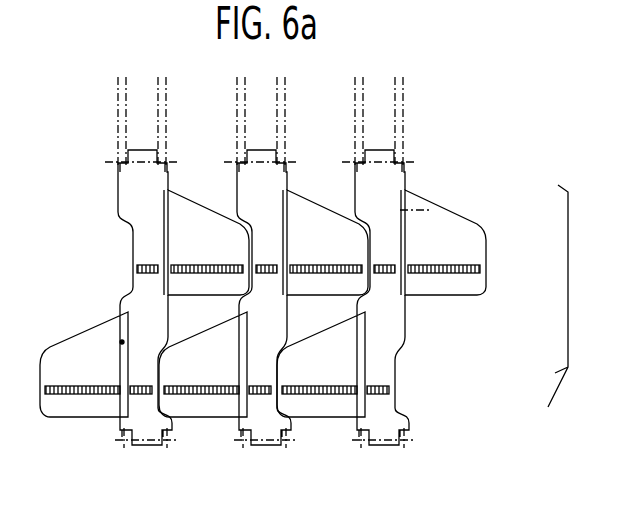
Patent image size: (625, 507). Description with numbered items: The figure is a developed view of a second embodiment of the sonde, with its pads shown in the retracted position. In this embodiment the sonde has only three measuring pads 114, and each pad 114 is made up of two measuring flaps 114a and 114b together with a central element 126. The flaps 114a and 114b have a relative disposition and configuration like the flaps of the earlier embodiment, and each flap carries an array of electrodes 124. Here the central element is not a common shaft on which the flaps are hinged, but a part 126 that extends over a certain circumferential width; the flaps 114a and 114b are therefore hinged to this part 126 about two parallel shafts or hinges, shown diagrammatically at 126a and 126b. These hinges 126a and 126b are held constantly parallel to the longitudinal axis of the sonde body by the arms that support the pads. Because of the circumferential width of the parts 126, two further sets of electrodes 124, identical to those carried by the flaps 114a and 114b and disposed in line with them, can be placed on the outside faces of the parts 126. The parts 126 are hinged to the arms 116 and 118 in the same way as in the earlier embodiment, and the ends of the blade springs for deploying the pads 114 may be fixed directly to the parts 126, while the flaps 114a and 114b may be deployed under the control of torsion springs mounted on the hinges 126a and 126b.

The measuring pad 114 is at (545, 311).
The measuring flap 114a is at (468, 242).
The measuring flap 114b is at (342, 360).
The arm 116 is at (400, 443).
The arm 118 is at (167, 132).
The electrodes 124 is at (200, 267).
The central element 126 is at (388, 313).
The hinge 126a is at (410, 208).
The hinge 126b is at (122, 342).